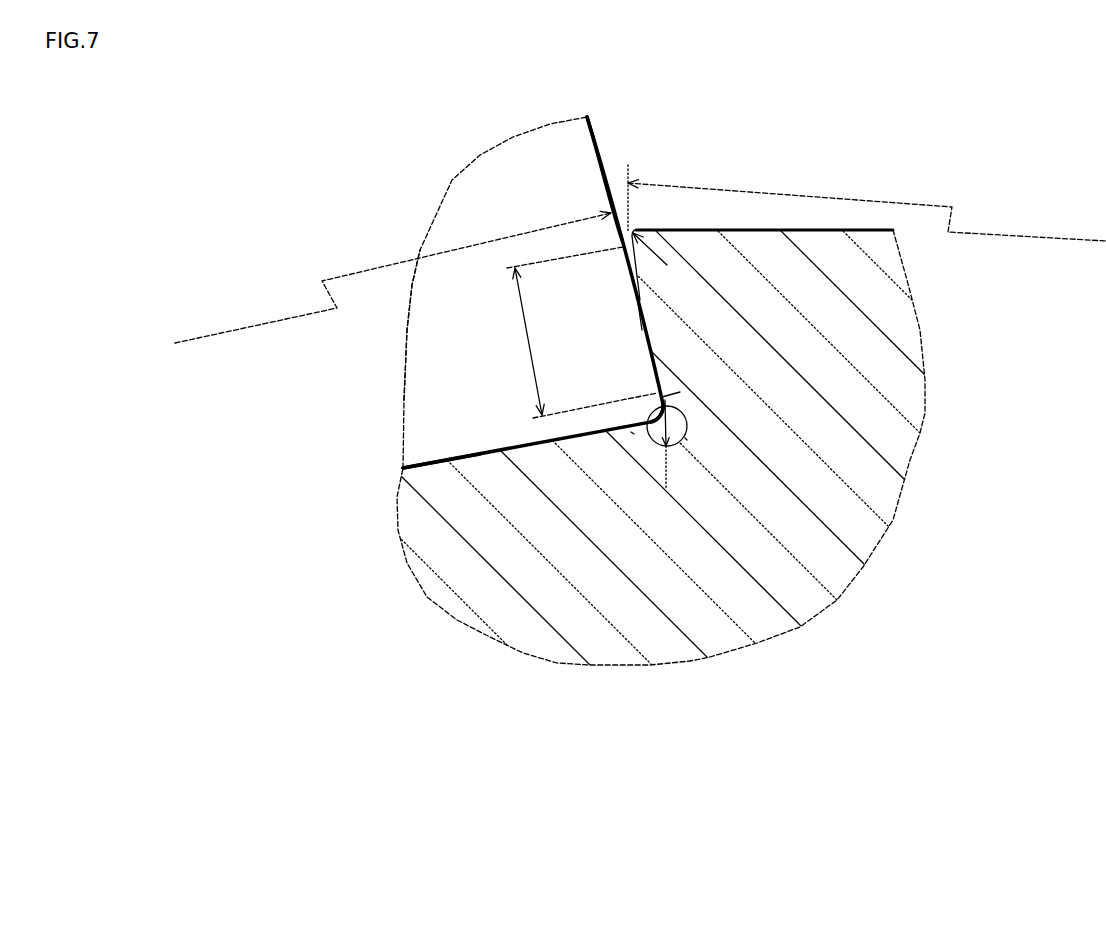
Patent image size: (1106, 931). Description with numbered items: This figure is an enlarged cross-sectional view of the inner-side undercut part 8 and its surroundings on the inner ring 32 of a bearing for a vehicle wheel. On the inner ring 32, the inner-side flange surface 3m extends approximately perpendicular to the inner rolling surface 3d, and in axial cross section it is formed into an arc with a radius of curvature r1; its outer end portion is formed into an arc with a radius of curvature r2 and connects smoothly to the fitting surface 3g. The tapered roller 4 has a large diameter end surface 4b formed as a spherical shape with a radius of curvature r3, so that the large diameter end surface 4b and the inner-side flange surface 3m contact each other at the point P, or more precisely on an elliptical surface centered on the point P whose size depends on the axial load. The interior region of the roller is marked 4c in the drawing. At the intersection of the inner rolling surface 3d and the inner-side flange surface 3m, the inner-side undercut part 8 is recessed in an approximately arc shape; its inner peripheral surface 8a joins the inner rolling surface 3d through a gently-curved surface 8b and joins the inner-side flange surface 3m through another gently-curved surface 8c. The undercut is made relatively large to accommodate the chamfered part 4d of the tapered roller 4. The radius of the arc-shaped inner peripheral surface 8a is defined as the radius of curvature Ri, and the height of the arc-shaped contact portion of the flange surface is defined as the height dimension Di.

The inner ring 32 is at (908, 460).
The inner-side undercut part 8 is at (803, 400).
The inner peripheral surface 8a is at (685, 438).
The gently-curved surface 8b is at (631, 432).
The gently-curved surface 8c is at (662, 397).
The fitting surface 3g is at (788, 233).
The inner rolling surface 3d is at (438, 462).
The inner-side flange surface 3m is at (645, 338).
The tapered roller 4 is at (478, 418).
The large diameter end surface 4b is at (597, 157).
The insert interior 4c is at (443, 340).
The chamfered part 4d is at (678, 407).
The point P is at (641, 313).
The radius of curvature Ri is at (653, 445).
The height dimension Di is at (579, 332).
The radius of curvature r1 is at (867, 203).
The radius of curvature r2 is at (658, 248).
The radius of curvature r3 is at (393, 277).